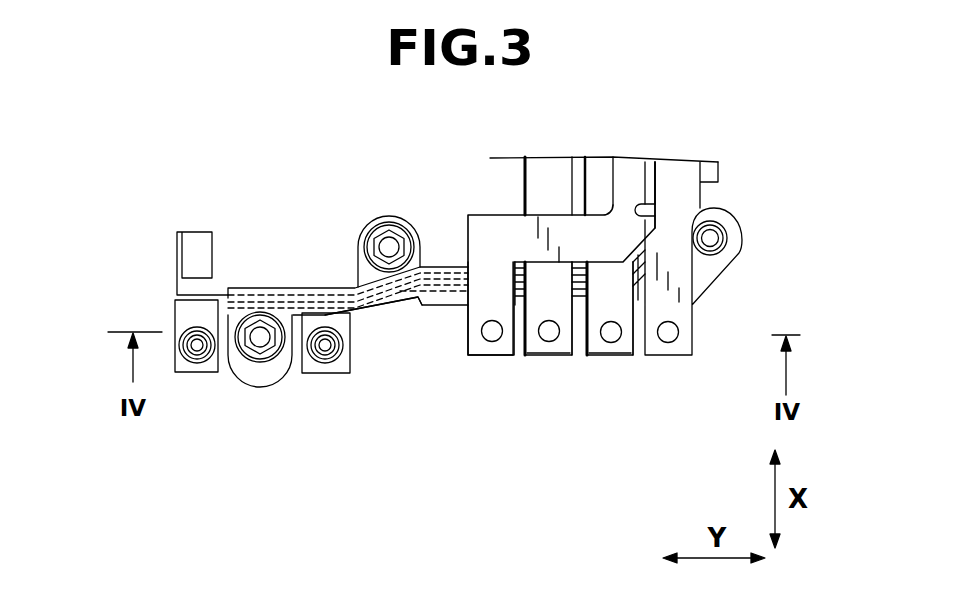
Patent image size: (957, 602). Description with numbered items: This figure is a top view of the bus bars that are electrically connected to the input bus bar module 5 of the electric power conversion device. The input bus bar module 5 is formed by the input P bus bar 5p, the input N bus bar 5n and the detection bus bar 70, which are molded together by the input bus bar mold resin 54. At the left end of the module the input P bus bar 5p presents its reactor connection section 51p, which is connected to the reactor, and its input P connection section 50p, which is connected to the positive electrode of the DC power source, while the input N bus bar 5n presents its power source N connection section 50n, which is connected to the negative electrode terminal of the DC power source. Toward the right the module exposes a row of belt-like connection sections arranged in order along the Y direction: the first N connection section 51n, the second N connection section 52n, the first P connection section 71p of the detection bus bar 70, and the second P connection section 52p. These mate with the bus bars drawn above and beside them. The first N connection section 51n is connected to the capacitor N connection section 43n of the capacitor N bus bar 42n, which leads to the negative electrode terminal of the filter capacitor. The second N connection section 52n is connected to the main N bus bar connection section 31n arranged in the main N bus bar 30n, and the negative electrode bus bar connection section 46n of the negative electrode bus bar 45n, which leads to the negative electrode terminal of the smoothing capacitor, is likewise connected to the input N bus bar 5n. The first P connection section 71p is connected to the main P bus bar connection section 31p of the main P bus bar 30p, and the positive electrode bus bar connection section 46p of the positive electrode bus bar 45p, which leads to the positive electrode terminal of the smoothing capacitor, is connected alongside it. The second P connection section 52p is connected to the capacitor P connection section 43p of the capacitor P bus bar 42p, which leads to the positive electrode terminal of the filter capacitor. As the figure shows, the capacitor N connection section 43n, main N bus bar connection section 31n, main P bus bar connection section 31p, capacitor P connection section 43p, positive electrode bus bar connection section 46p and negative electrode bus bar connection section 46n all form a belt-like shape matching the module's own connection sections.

The input bus bar module 5 is at (328, 218).
The input P bus bar 5p is at (447, 268).
The input N bus bar 5n is at (401, 300).
The reactor connection section 51p is at (177, 250).
The input bus bar mold resin 54 is at (298, 292).
The input P connection section 50p is at (178, 374).
The power source N connection section 50n is at (313, 375).
The main N bus bar 30n is at (523, 193).
The negative electrode bus bar 45n is at (542, 175).
The main P bus bar 30p is at (573, 172).
The positive electrode bus bar 45p is at (600, 172).
The capacitor N bus bar 42n is at (640, 168).
The capacitor P bus bar 42p is at (698, 172).
The first N connection section 51n is at (490, 360).
The capacitor N connection section 43n is at (505, 360).
The second N connection section 52n is at (533, 360).
The main N bus bar connection section 31n is at (538, 360).
The negative electrode bus bar connection section 46n is at (547, 360).
The detection bus bar 70 is at (578, 360).
The second P connection section 52p is at (665, 358).
The main P bus bar connection section 31p is at (600, 360).
The first P connection section 71p is at (595, 360).
The positive electrode bus bar connection section 46p is at (607, 360).
The capacitor P connection section 43p is at (682, 358).